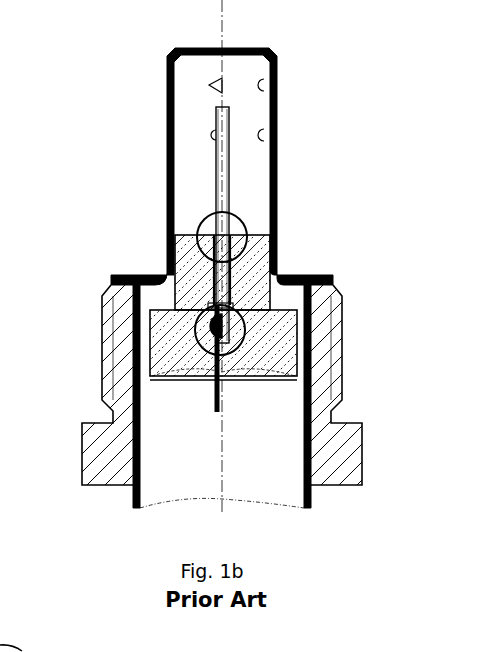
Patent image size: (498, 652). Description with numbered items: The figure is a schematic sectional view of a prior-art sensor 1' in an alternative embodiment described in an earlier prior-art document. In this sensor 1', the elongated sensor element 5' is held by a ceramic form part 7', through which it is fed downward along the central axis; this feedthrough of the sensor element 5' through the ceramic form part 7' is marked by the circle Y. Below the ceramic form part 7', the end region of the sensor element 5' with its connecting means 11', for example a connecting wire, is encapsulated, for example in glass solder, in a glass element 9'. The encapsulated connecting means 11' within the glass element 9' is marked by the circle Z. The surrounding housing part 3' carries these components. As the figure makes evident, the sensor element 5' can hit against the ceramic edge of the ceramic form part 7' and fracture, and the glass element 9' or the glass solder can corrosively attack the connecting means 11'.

The sensor 1' is at (254, 278).
The body / housing 3' is at (249, 250).
The sensor element 5' is at (272, 225).
The ceramic form part 7' is at (249, 250).
The glass element 9' is at (249, 250).
The connecting means 11' is at (122, 358).
The circle Y is at (246, 229).
The circle Z is at (197, 318).